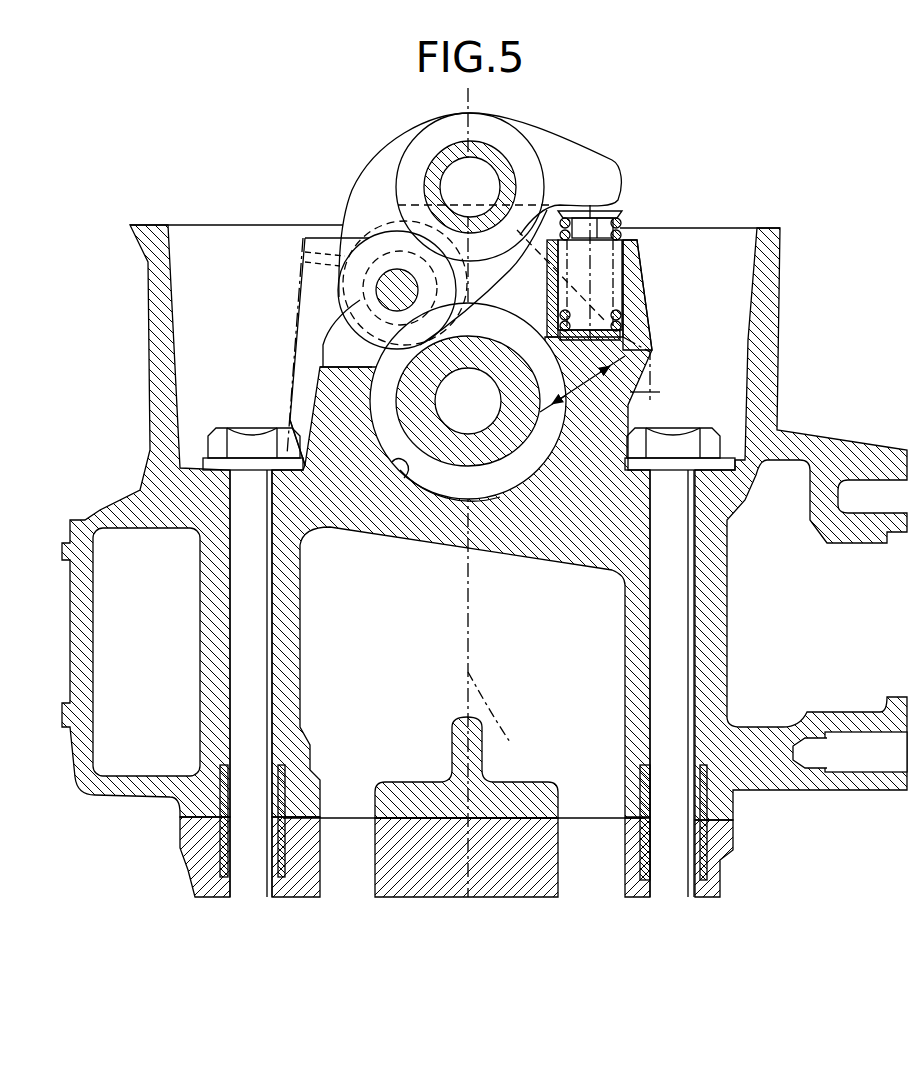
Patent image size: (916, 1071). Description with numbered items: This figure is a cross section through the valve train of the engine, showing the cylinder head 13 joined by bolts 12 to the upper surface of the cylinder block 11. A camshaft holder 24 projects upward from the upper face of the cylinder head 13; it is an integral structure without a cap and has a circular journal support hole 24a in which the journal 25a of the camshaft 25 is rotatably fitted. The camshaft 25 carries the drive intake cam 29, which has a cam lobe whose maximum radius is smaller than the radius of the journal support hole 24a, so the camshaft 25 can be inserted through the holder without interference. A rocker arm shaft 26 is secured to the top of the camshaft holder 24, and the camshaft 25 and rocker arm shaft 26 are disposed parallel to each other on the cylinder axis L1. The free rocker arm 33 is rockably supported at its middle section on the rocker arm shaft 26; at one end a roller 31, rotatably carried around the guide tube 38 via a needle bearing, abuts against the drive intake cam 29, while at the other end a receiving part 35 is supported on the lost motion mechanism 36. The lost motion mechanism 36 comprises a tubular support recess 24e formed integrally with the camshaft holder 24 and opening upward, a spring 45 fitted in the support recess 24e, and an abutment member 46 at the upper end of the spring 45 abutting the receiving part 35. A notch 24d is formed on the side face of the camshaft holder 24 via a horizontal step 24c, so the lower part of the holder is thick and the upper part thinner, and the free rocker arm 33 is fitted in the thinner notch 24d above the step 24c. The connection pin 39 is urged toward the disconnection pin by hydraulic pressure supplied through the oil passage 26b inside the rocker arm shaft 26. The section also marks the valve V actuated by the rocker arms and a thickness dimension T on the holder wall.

The cylinder block 11 is at (720, 862).
The bolts 12 is at (262, 695).
The cylinder head 13 is at (835, 437).
The camshaft holder 24 is at (325, 335).
The journal support hole 24a is at (400, 470).
The horizontal step 24c is at (323, 352).
The notch 24d is at (600, 298).
The tubular support recess 24e is at (605, 306).
The camshaft 25 is at (493, 327).
The journal 25a is at (505, 500).
The rocker arm shaft 26 is at (412, 188).
The oil passage 26b is at (473, 160).
The drive intake cam 29 is at (437, 492).
The roller 31 is at (360, 355).
The free rocker arm 33 is at (400, 128).
The receiving part 35 is at (612, 178).
The lost motion mechanism 36 is at (650, 252).
The guide tube 38 is at (366, 285).
The connection pin 39 is at (375, 292).
The spring 45 is at (652, 354).
The abutment member 46 is at (625, 218).
The valve V is at (353, 183).
The wall thickness T is at (582, 384).
The cylinder axis L1 is at (504, 714).